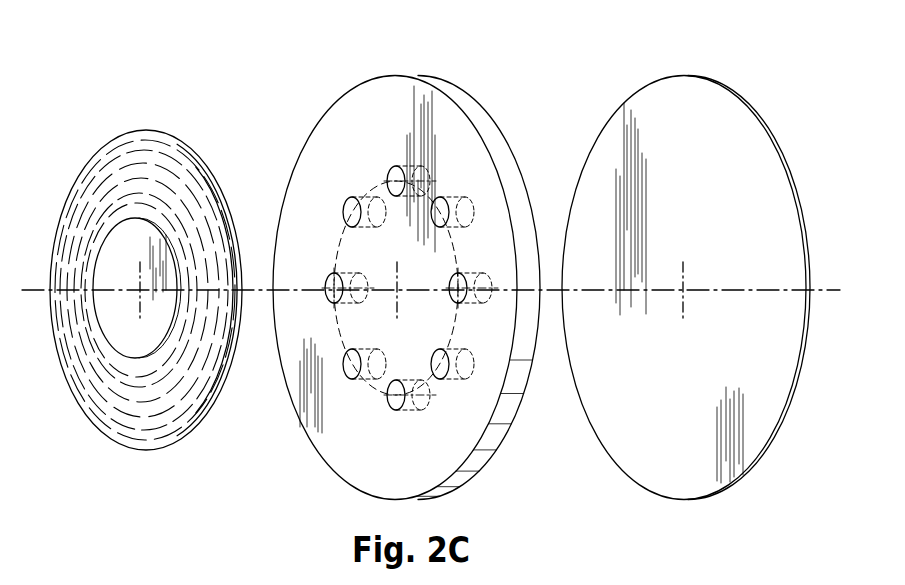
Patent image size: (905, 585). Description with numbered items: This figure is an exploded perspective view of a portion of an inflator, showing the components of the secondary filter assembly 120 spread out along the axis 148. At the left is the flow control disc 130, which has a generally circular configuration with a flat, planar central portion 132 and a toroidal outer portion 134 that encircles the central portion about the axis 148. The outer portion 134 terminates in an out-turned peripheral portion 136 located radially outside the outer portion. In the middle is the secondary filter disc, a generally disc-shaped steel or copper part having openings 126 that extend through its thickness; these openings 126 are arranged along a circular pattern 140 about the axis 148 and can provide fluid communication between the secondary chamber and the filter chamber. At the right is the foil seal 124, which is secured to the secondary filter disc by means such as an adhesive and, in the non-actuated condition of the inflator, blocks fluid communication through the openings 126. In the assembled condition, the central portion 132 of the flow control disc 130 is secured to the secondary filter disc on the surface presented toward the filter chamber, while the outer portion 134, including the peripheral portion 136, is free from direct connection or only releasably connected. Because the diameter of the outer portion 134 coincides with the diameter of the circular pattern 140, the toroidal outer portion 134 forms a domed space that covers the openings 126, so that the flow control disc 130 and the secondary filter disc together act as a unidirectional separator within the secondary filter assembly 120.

The secondary filter assembly 120 is at (406, 262).
The foil seal 124 is at (672, 98).
The openings 126 is at (459, 274).
The flow control disc 130 is at (155, 284).
The central portion 132 is at (136, 252).
The outer portion 134 is at (183, 196).
The peripheral portion 136 is at (163, 440).
The circular pattern 140 is at (385, 392).
The axis 148 is at (35, 291).